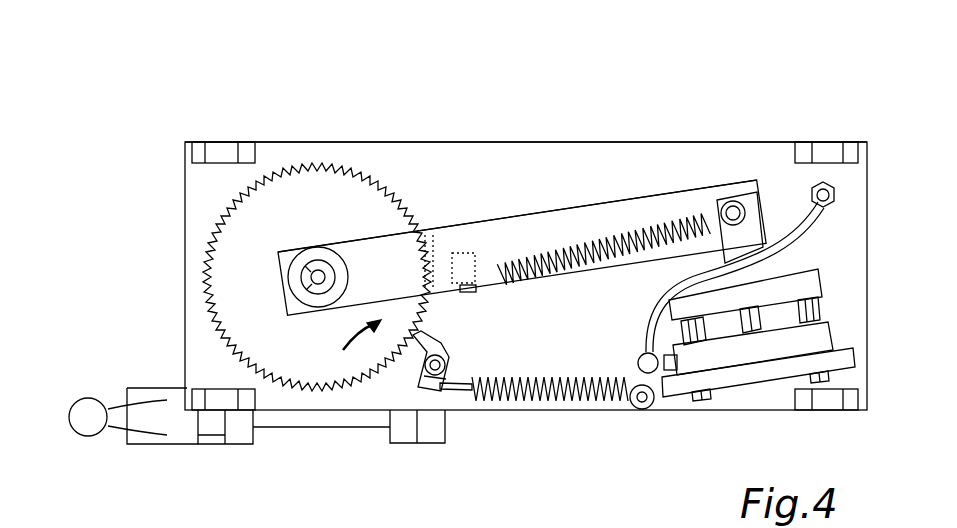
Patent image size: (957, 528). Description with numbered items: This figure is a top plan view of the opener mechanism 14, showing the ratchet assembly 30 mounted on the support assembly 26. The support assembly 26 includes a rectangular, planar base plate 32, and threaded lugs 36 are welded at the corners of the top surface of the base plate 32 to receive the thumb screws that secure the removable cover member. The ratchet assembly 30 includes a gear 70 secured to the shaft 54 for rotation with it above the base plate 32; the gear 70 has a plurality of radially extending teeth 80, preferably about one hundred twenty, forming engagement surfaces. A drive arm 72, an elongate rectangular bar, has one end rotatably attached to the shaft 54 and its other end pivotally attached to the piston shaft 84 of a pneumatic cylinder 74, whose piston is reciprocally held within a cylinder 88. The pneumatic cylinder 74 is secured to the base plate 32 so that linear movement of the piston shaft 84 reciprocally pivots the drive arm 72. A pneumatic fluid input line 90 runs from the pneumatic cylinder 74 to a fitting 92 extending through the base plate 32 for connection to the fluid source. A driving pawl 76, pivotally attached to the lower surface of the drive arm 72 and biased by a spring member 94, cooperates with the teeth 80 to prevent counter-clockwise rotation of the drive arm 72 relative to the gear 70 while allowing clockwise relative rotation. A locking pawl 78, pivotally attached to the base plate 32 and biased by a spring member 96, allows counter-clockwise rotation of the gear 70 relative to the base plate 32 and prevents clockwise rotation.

The opener mechanism 14 is at (126, 73).
The support assembly 26 is at (456, 140).
The ratchet assembly 30 is at (631, 188).
The base plate 32 is at (707, 148).
The threaded lugs 36 is at (223, 148).
The shaft 54 is at (338, 265).
The gear 70 is at (303, 158).
The drive arm 72 is at (547, 210).
The pneumatic cylinder 74 is at (746, 404).
The driving pawl 76 is at (448, 245).
The locking pawl 78 is at (440, 340).
The teeth 80 is at (207, 270).
The piston shaft 84 is at (748, 230).
The cylinder 88 is at (815, 312).
The pneumatic fluid input line 90 is at (823, 228).
The fitting 92 is at (838, 192).
The spring member 94 is at (588, 240).
The spring member 96 is at (540, 402).